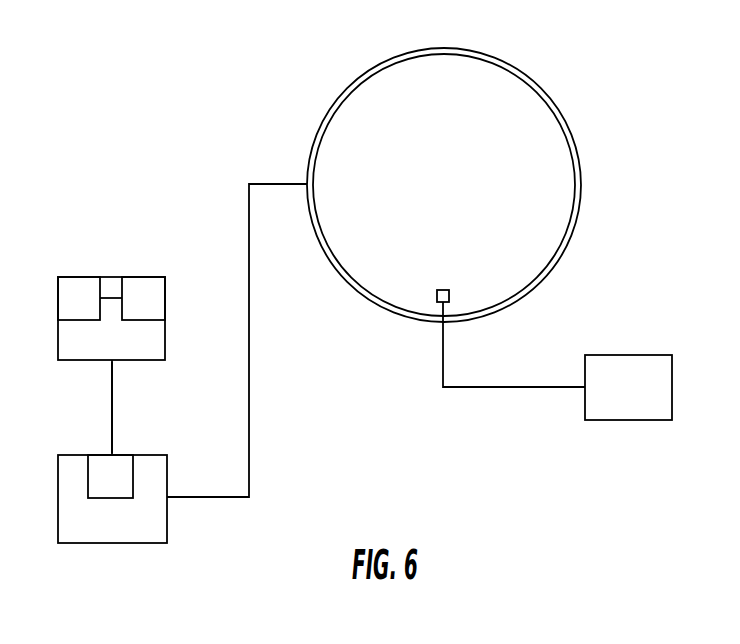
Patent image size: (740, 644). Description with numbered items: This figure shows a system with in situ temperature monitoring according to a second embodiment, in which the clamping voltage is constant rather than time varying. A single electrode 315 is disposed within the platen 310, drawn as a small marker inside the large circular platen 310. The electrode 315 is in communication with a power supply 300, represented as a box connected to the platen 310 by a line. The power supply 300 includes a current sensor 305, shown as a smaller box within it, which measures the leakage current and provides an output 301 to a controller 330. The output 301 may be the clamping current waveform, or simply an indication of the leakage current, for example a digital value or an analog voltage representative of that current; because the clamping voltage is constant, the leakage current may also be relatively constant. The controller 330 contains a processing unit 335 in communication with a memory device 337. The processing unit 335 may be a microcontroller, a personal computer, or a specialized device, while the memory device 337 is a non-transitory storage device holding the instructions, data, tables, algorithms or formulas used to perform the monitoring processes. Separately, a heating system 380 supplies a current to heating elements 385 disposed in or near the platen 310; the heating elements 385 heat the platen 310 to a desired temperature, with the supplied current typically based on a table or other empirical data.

The power supply 300 is at (112, 499).
The output 301 is at (112, 438).
The current sensor 305 is at (110, 476).
The platen 310 is at (408, 52).
The electrode 315 is at (444, 185).
The controller 330 is at (58, 340).
The processing unit 335 is at (90, 298).
The memory device 337 is at (143, 298).
The heating system 380 is at (628, 387).
The heating elements 385 is at (443, 289).